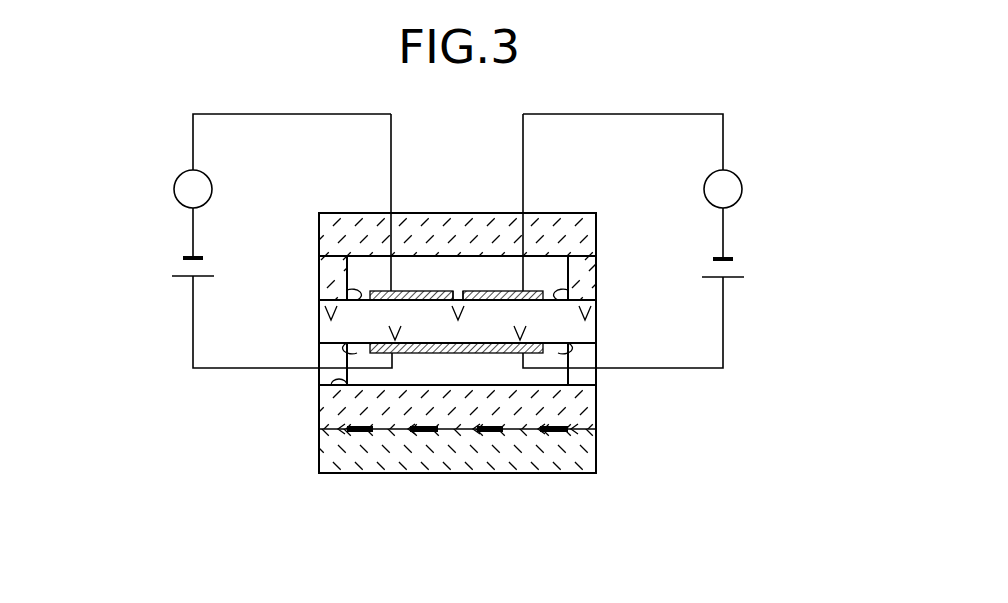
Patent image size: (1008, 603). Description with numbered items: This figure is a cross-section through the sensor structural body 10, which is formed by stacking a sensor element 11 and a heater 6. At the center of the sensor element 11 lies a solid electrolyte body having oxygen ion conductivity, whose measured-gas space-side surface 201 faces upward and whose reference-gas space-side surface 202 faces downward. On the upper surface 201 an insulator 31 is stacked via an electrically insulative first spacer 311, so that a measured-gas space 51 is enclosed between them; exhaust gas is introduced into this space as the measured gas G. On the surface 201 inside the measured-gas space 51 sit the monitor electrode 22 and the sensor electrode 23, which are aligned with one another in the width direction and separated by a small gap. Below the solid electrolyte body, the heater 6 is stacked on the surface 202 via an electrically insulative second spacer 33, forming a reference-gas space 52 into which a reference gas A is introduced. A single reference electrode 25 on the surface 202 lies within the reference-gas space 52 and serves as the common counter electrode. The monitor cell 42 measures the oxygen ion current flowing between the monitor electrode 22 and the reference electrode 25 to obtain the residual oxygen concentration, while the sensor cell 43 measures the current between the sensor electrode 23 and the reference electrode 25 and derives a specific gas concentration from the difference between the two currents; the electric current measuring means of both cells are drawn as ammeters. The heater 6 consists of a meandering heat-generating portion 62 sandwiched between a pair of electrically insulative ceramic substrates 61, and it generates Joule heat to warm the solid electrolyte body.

The sensor structural body 10 is at (652, 470).
The heater 6 is at (492, 481).
The ceramic substrates 61 is at (583, 413).
The heat-generating portion 62 is at (557, 432).
The sensor element 11 is at (600, 283).
The measured-gas space-side surface 201 is at (387, 204).
The reference-gas space-side surface 202 is at (350, 350).
The monitor electrode 22 is at (383, 288).
The sensor electrode 23 is at (500, 295).
The measured gas G is at (458, 277).
The reference electrode 25 is at (438, 353).
The insulator 31 is at (437, 242).
The first spacer 311 is at (333, 273).
The second spacer 33 is at (325, 378).
The reference gas A is at (407, 369).
The measured-gas space 51 is at (547, 272).
The reference-gas space 52 is at (548, 378).
The monitor cell 42 is at (173, 168).
The sensor cell 43 is at (748, 175).